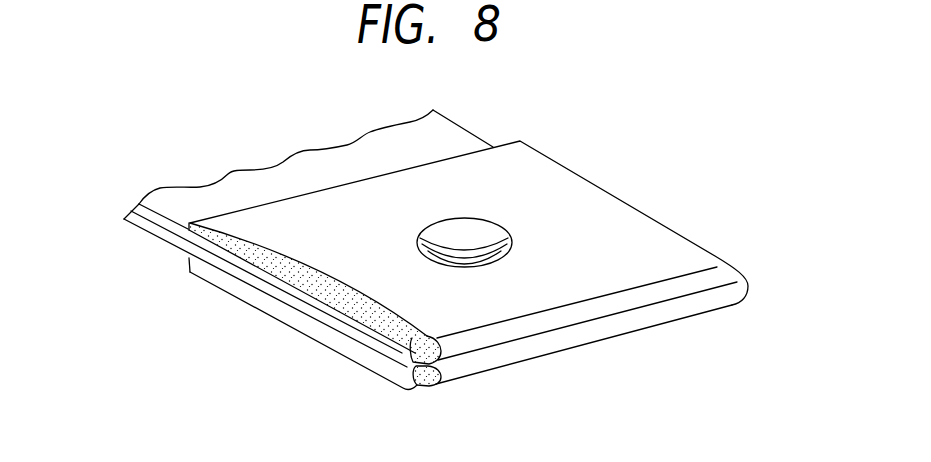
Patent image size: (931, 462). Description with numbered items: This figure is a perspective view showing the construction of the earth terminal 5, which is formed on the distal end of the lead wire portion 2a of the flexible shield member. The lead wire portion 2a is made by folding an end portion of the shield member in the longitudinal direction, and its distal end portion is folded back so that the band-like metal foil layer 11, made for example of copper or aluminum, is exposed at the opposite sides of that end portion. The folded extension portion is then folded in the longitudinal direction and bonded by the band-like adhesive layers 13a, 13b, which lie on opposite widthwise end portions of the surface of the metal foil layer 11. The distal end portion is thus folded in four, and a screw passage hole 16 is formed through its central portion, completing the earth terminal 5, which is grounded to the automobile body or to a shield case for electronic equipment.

The lead wire portion 2a is at (320, 168).
The earth terminal 5 is at (469, 258).
The metal foil layer 11 is at (618, 223).
The screw passage hole 16 is at (470, 247).
The adhesive layer 13a is at (426, 384).
The adhesive layer 13b is at (316, 283).